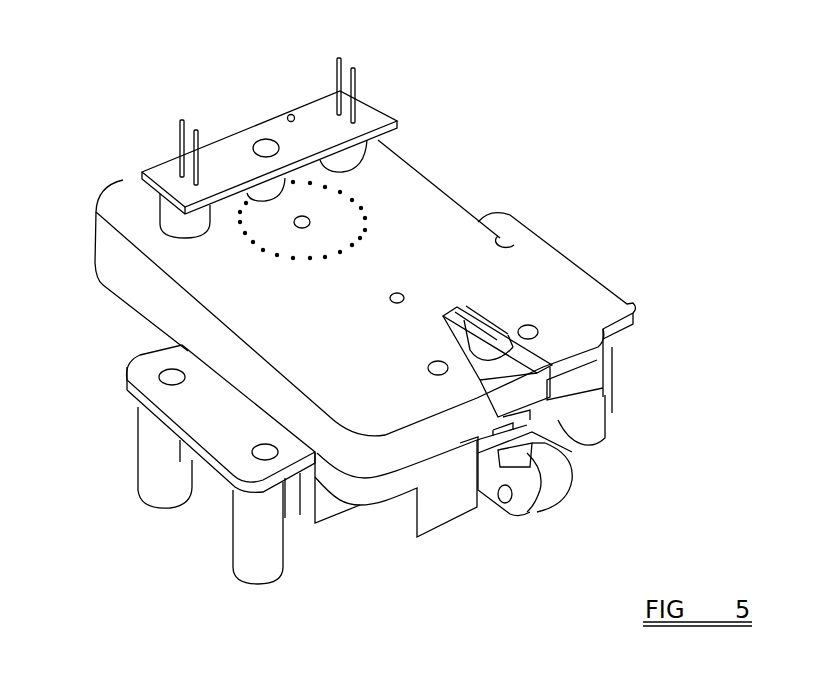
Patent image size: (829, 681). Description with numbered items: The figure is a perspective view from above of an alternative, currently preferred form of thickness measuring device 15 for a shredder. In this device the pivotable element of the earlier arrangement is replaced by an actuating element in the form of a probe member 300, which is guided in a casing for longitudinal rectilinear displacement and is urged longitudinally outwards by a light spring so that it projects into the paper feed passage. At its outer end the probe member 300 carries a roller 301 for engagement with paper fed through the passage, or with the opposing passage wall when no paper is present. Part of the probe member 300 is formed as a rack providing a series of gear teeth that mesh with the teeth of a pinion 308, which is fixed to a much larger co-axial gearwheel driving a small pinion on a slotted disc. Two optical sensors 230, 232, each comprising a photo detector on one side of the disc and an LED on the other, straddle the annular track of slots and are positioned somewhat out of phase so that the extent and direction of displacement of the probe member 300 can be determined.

The thickness measuring device 15 is at (568, 204).
The optical sensor 230 is at (168, 213).
The optical sensor 232 is at (350, 160).
The pinion 308 is at (412, 207).
The probe member 300 is at (562, 468).
The roller 301 is at (550, 510).